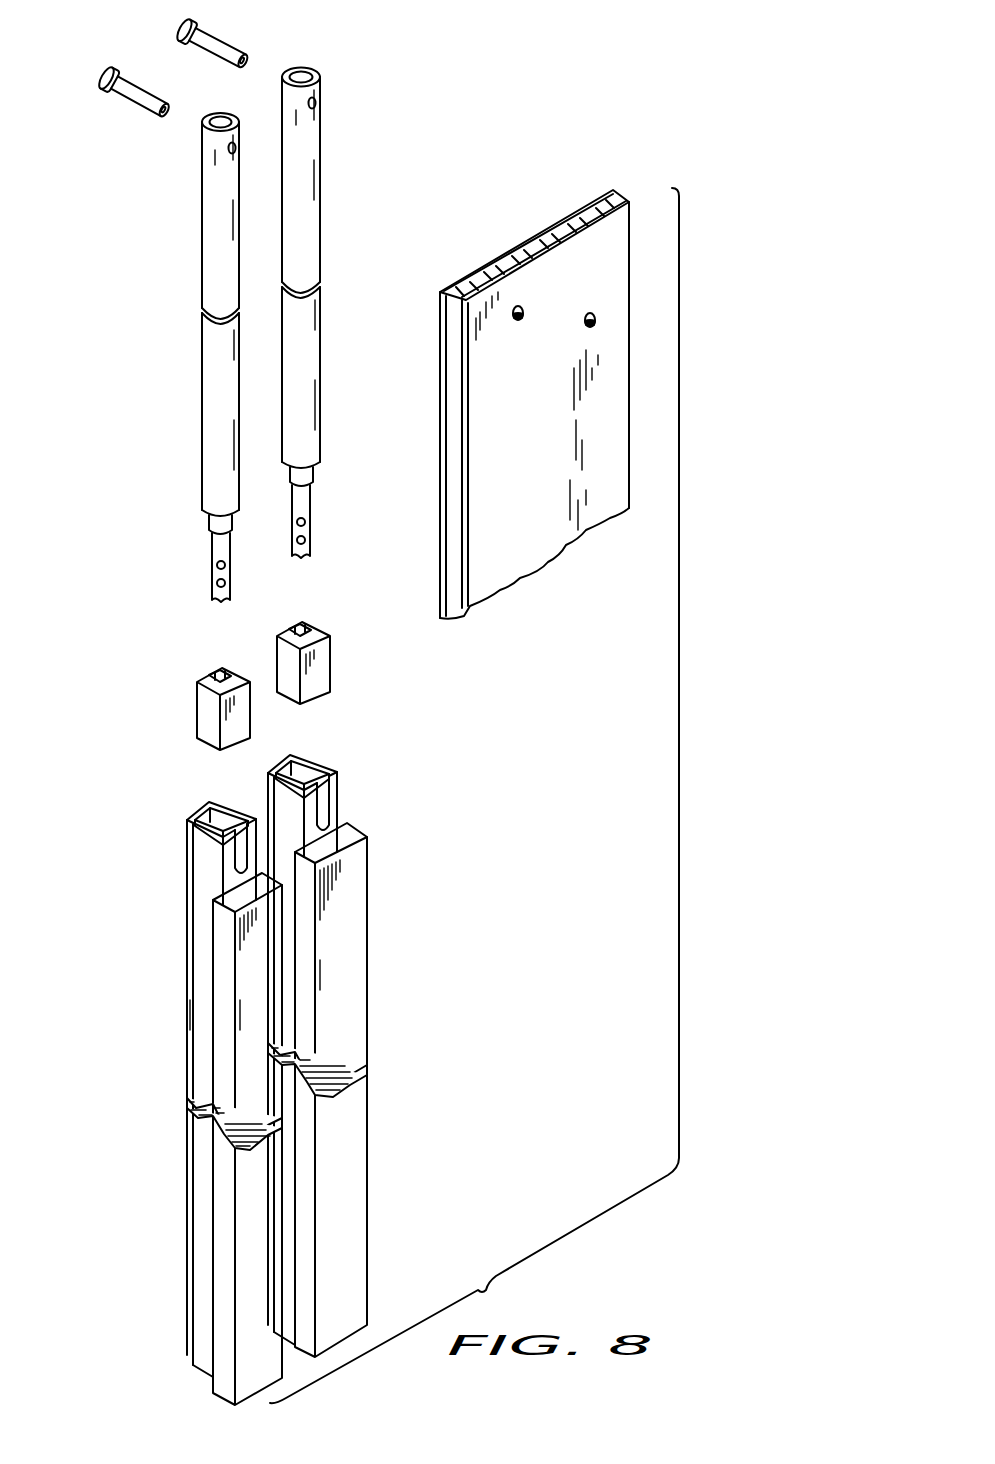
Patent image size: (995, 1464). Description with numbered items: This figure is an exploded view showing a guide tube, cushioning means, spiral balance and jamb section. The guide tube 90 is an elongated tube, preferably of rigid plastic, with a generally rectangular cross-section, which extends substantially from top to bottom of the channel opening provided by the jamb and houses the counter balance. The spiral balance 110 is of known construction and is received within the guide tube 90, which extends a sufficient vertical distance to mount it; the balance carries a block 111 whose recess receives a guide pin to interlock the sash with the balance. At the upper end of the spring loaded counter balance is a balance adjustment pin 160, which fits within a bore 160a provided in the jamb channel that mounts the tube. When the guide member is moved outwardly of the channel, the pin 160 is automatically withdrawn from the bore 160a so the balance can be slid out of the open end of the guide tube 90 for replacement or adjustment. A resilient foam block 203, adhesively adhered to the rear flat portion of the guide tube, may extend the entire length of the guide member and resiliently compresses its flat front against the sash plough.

The balance adjustment pin 160 is at (222, 44).
The spiral balance 110 is at (288, 389).
The bore 160a is at (588, 328).
The block 111 is at (240, 726).
The guide tube 90 is at (196, 803).
The resilient foam block 203 is at (247, 955).